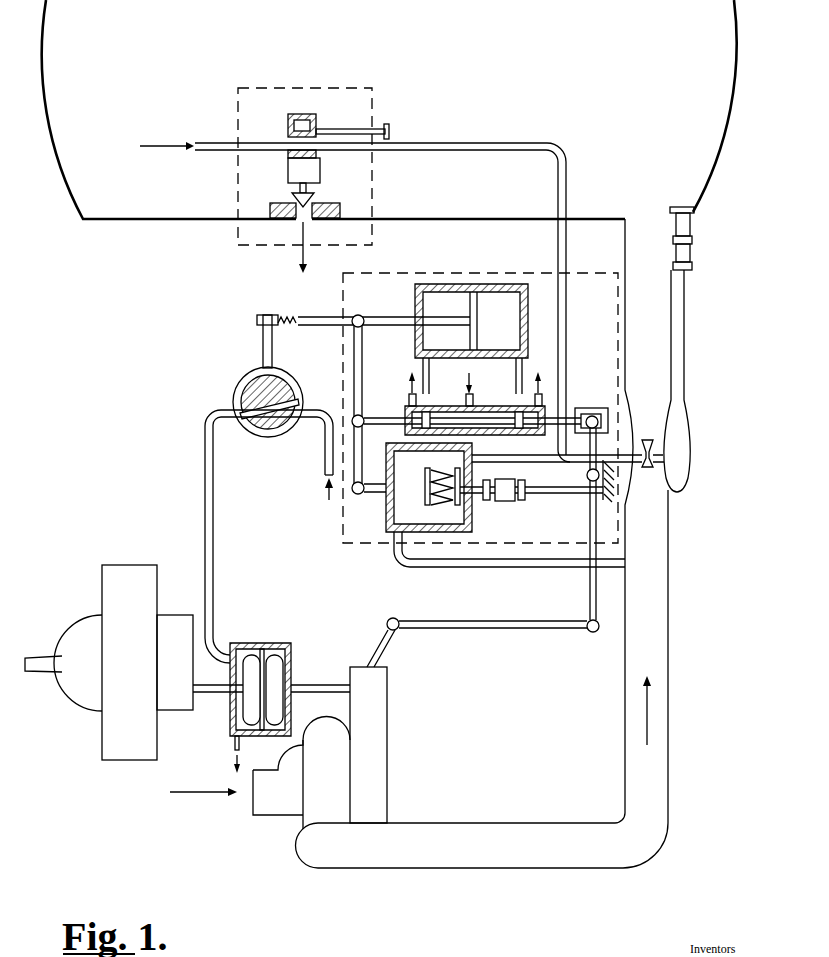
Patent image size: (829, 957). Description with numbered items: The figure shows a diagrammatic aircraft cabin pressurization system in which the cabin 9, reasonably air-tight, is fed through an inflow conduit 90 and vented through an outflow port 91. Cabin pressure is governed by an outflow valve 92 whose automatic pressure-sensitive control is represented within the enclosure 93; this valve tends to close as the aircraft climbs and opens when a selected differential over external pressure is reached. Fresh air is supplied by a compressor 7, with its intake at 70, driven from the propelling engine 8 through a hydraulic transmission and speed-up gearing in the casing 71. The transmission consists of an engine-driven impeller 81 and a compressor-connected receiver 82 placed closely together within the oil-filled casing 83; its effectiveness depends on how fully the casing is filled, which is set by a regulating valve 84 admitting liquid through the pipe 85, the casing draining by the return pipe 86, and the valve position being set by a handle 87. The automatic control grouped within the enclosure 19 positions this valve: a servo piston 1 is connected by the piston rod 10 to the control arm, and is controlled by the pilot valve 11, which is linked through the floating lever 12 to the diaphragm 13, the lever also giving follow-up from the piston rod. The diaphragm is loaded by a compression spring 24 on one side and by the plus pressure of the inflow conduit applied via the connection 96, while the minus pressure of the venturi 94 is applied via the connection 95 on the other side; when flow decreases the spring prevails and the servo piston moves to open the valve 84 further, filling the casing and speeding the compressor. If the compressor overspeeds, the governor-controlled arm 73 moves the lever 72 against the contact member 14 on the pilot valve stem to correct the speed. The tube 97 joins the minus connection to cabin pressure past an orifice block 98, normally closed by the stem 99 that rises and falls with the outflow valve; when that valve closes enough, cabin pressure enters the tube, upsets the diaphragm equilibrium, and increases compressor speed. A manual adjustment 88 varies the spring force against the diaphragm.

The servo piston 1 is at (477, 313).
The compressor 7 is at (318, 800).
The propelling engine 8 is at (88, 628).
The cabin 9 is at (70, 197).
The piston rod 10 is at (306, 320).
The pilot valve 11 is at (518, 412).
The floating lever 12 is at (353, 447).
The diaphragm 13 is at (468, 505).
The contact member 14 is at (590, 408).
The enclosure 19 is at (438, 273).
The compression spring 24 is at (452, 468).
The compressor intake 70 is at (252, 802).
The casing 71 is at (372, 748).
The lever 72 is at (589, 515).
The governor-controlled arm 73 is at (386, 652).
The impeller 81 is at (251, 665).
The receiver 82 is at (273, 665).
The casing 83 is at (292, 658).
The regulating valve 84 is at (256, 390).
The pipe 85 is at (205, 468).
The return pipe 86 is at (235, 741).
The handle 87 is at (273, 347).
The manual adjustment 88 is at (685, 206).
The inflow conduit 90 is at (665, 318).
The outflow port 91 is at (297, 219).
The outflow valve 92 is at (318, 200).
The enclosure 93 is at (289, 88).
The venturi 94 is at (653, 459).
The minus pressure connection 95 is at (543, 462).
The plus pressure connection 96 is at (505, 567).
The tube 97 is at (466, 122).
The orifice block 98 is at (292, 126).
The stem 99 is at (293, 155).